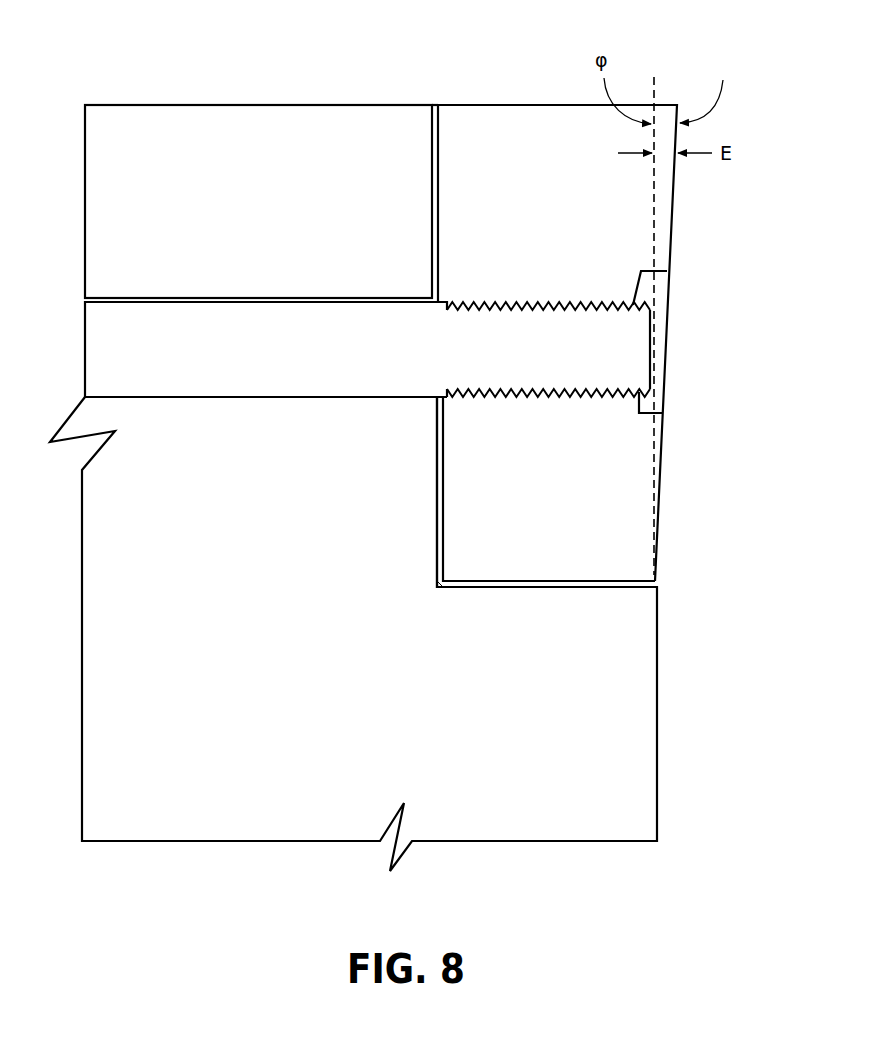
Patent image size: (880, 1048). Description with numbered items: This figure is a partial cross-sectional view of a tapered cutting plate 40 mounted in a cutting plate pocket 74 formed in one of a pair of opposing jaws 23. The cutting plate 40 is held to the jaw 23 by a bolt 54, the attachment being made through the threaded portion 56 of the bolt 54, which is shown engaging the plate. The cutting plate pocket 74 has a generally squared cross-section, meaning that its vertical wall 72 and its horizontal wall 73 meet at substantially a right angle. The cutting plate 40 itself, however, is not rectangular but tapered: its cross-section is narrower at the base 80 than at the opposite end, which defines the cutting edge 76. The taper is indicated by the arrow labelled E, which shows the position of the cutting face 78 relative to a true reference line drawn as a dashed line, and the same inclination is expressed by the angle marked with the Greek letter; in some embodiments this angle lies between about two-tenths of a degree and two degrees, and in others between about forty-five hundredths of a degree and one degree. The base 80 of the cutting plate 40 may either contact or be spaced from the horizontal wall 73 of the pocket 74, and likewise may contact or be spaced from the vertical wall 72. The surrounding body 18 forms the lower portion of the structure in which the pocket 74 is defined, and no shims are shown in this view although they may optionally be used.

The base body 18 is at (248, 711).
The jaw 23 is at (228, 215).
The cutting plate 40 is at (555, 502).
The bolt 54 is at (345, 360).
The threaded portion 56 is at (497, 303).
The vertical wall 72 is at (432, 185).
The horizontal wall 73 is at (537, 589).
The cutting plate pocket 74 is at (455, 90).
The cutting edge 76 is at (677, 104).
The cutting face 78 is at (671, 217).
The base 80 is at (582, 580).